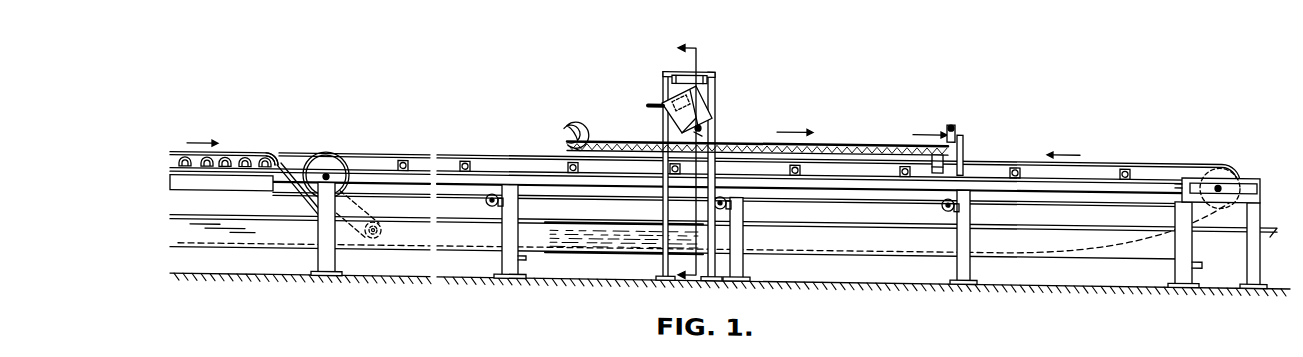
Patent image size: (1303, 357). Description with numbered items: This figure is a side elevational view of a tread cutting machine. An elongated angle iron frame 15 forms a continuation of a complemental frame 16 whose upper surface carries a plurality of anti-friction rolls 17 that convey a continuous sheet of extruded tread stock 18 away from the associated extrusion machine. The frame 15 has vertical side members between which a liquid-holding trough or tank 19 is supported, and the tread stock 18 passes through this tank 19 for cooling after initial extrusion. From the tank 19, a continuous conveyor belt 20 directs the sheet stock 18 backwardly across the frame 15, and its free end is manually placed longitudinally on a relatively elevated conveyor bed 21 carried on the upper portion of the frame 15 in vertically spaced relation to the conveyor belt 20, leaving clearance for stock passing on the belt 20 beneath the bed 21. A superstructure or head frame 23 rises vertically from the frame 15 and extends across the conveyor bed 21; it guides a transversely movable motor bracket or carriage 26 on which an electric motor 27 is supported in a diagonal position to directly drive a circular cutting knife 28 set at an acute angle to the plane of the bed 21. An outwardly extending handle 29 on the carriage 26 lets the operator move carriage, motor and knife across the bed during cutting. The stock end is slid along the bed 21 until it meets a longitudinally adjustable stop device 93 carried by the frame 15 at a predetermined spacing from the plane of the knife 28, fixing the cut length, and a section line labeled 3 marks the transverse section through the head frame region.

The section line 3- 3 is at (691, 168).
The elongated angle iron frame 15 is at (518, 198).
The complemental frame 16 is at (222, 182).
The anti-friction rolls 17 is at (248, 156).
The continuous sheet of extruded tread stock 18 is at (572, 119).
The liquid-holding trough or tank 19 is at (472, 232).
The continuous conveyor belt 20 is at (380, 151).
The conveyor bed 21 is at (870, 135).
The superstructure or head frame 23 is at (713, 93).
The motor bracket or carriage 26 is at (711, 70).
The electric motor 27 is at (700, 119).
The circular cutting knife 28 is at (716, 124).
The handle 29 is at (648, 95).
The longitudinally adjustable stop device 93 is at (958, 118).